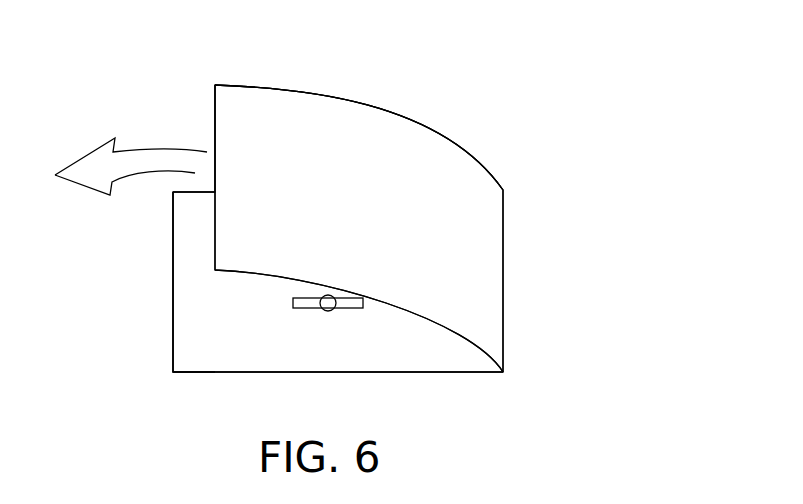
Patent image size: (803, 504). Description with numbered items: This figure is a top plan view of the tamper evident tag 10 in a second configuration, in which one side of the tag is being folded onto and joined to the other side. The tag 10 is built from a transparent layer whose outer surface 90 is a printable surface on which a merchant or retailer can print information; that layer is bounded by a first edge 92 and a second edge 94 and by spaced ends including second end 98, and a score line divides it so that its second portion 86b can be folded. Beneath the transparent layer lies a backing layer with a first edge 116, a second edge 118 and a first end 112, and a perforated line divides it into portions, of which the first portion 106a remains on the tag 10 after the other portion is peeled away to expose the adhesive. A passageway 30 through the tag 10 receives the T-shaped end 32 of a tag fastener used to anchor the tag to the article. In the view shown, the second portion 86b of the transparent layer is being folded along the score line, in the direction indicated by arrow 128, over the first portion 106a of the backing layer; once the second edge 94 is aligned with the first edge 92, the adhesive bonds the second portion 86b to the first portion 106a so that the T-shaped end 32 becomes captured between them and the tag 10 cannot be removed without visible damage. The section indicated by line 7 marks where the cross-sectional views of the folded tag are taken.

The tag 10 is at (493, 117).
The outer surface 90 is at (367, 204).
The first edge 92 is at (363, 103).
The second edge 94 is at (438, 313).
The second end 98 is at (212, 112).
The second portion of transparent layer 86b is at (285, 123).
The first edge of backing layer 116 is at (197, 192).
The first end of backing layer 112 is at (172, 303).
The first portion of backing layer 106a is at (203, 333).
The second edge of backing layer 118 is at (213, 373).
The passageway 30 is at (338, 312).
The T-shaped end 32 is at (320, 305).
The arrow 128 is at (136, 150).
The section line 7- 7 is at (173, 295).